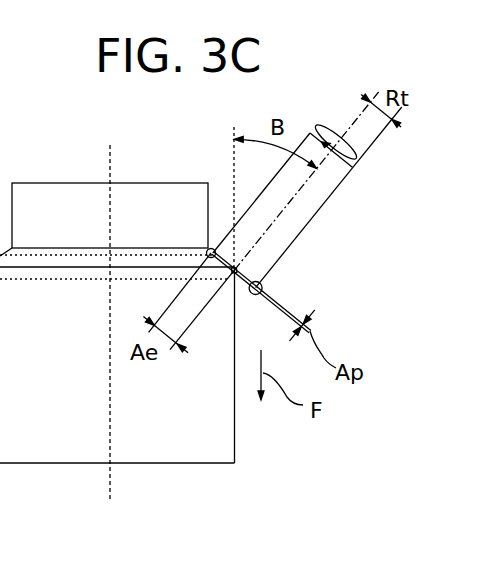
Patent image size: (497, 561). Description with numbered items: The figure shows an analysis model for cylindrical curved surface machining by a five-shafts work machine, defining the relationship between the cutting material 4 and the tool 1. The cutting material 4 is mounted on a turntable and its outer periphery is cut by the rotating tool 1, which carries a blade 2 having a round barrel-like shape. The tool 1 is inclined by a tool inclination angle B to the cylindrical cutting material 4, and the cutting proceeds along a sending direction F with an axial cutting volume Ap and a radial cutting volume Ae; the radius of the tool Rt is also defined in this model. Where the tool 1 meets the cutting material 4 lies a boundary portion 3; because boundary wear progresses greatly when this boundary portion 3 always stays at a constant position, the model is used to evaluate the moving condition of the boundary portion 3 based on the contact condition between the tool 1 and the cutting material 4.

The tool 1 is at (312, 216).
The blade 2 is at (262, 289).
The boundary portion 3 is at (209, 248).
The cutting material 4 is at (228, 440).